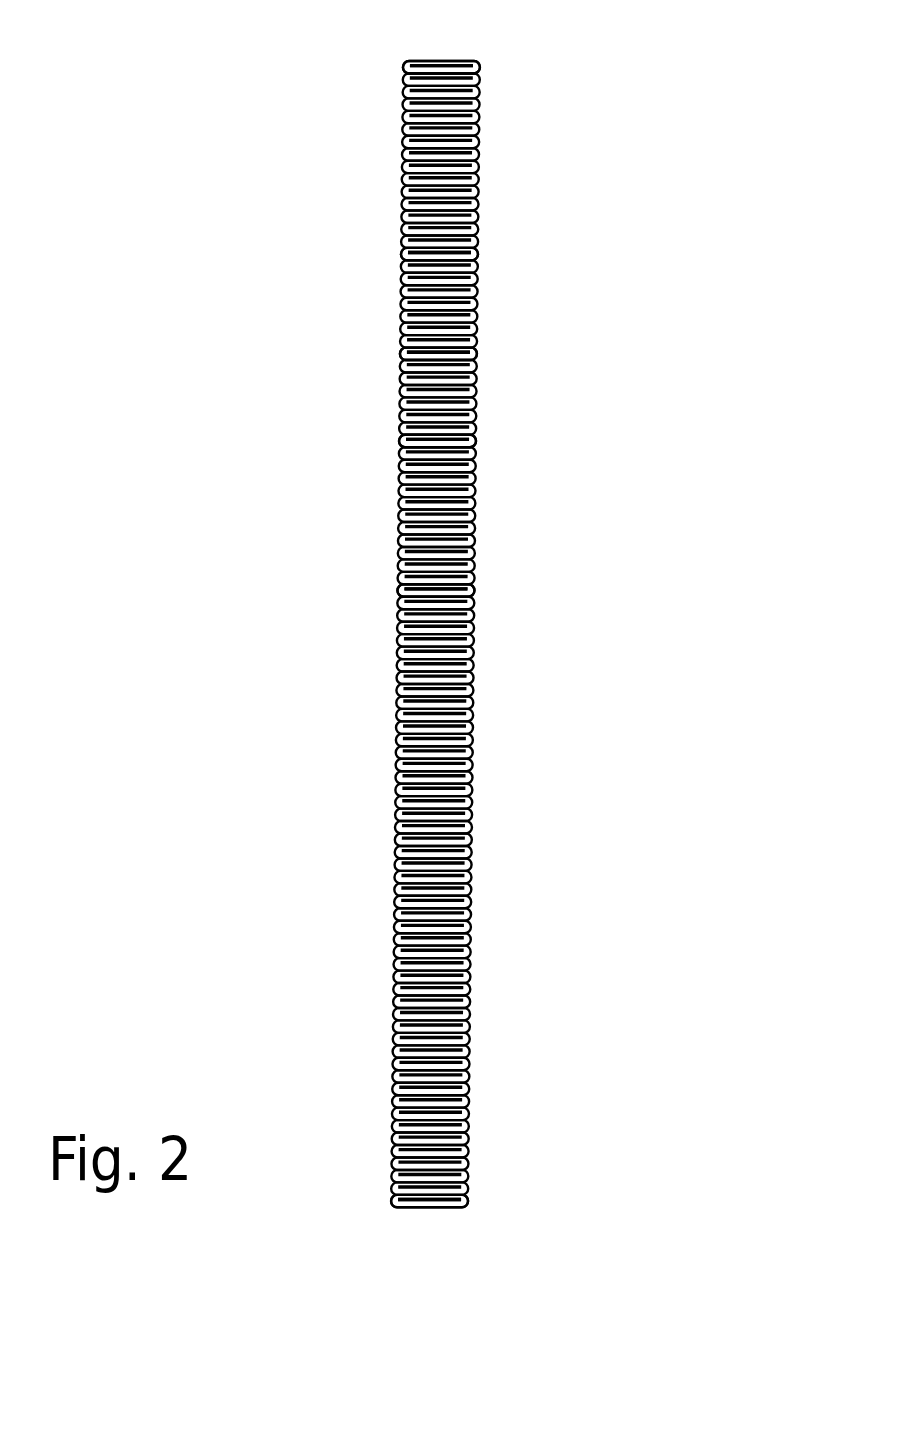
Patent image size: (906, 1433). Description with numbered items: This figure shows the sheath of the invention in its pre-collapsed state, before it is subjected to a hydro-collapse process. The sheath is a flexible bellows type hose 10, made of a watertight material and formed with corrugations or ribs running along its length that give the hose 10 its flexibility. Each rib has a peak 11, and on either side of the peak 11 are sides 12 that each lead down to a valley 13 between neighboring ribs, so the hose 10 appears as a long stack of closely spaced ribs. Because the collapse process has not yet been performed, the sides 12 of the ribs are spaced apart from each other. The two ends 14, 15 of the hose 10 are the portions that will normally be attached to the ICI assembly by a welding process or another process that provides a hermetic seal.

The flexible bellows type hose 10 is at (543, 140).
The peak 11 is at (477, 352).
The sides 12 is at (477, 250).
The valley 13 is at (477, 440).
The end 14 is at (462, 64).
The end 15 is at (437, 1207).